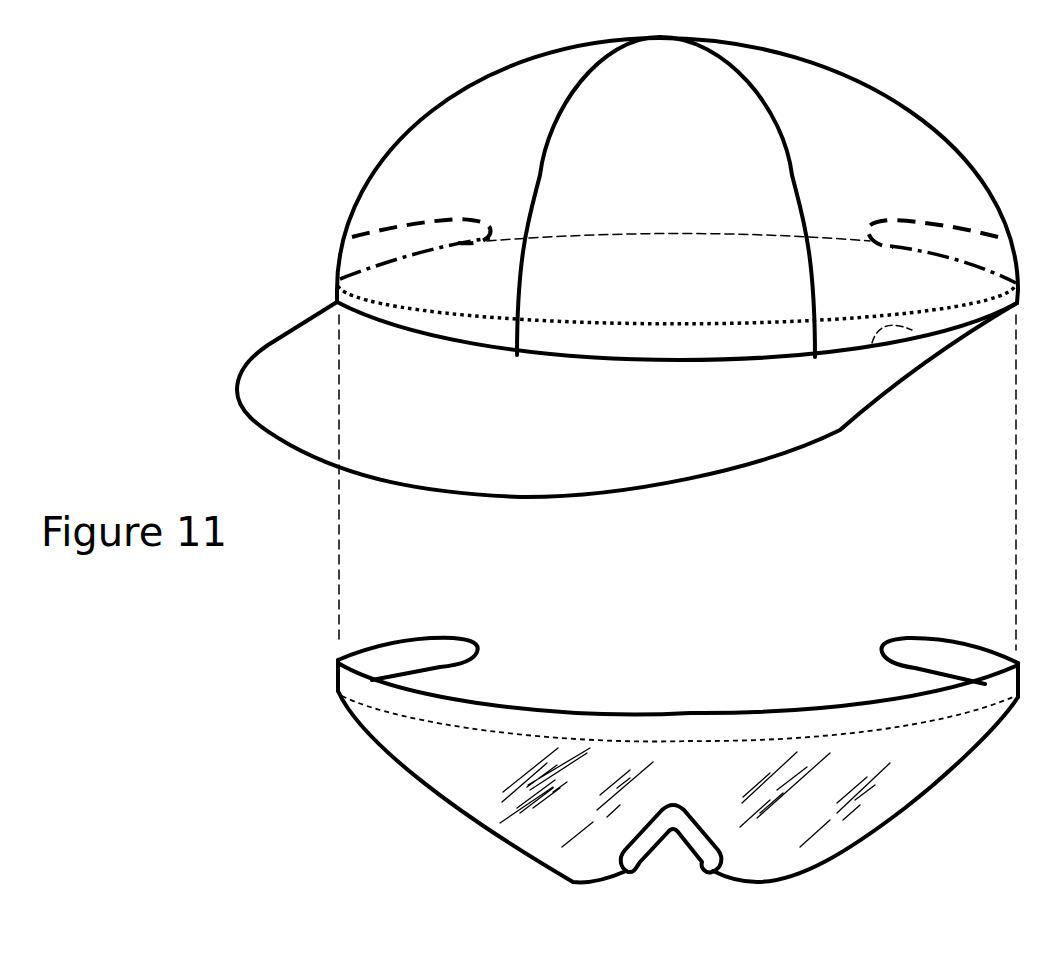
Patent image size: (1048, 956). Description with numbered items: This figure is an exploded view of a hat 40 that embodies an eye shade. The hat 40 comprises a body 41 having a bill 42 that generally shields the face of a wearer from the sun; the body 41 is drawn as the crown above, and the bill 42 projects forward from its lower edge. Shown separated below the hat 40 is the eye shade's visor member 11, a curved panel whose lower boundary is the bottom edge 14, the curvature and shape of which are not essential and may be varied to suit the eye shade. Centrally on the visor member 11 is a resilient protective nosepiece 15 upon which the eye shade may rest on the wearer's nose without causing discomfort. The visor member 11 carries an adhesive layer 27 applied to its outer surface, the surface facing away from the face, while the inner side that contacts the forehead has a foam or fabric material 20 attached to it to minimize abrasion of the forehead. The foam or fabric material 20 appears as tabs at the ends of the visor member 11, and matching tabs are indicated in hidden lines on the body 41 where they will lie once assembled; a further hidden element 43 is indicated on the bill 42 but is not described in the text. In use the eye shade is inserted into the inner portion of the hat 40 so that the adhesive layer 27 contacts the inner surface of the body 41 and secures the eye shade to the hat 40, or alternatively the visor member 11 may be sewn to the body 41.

The visor member 11 is at (463, 778).
The bottom edge 14 is at (920, 786).
The resilient protective nosepiece 15 is at (643, 847).
The foam or fabric material 20 is at (466, 228).
The adhesive layer 27 is at (655, 724).
The hat 40 is at (246, 174).
The body 41 is at (421, 137).
The bill 42 is at (292, 344).
The hidden tab 43 is at (872, 343).